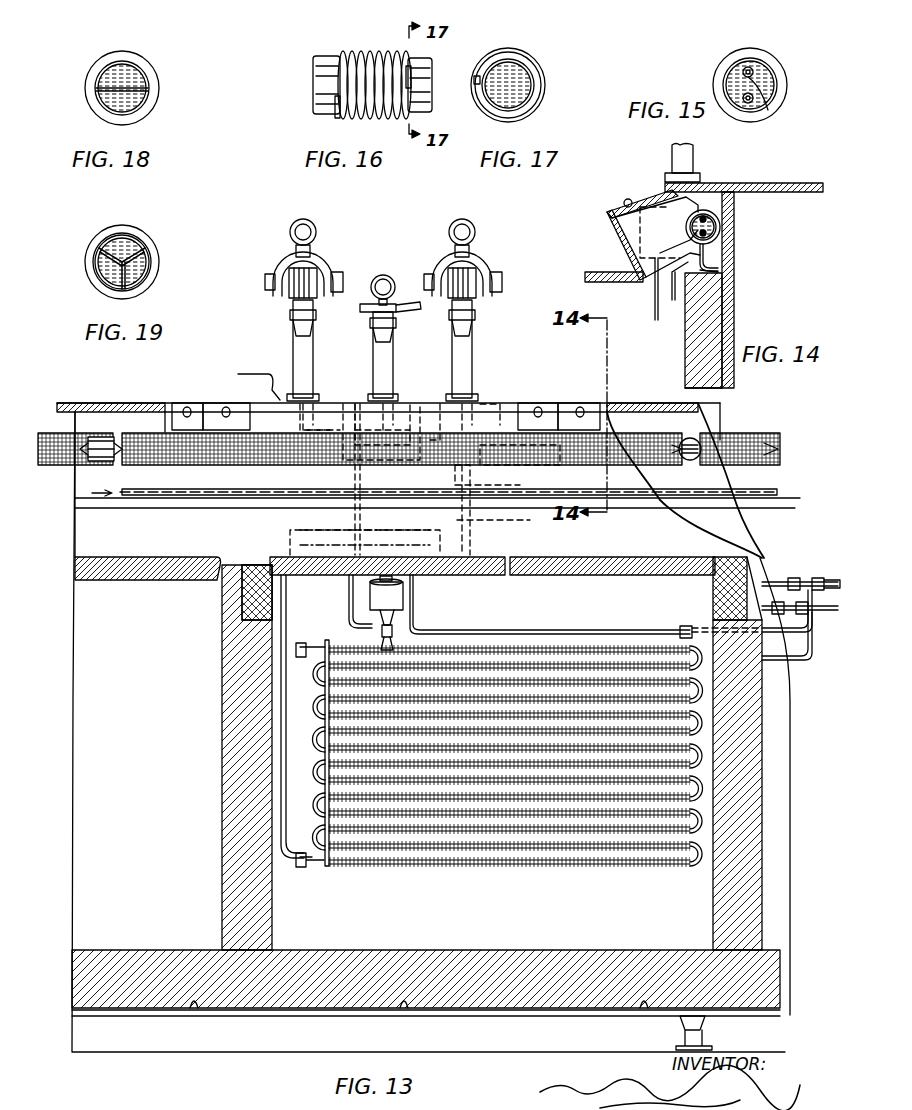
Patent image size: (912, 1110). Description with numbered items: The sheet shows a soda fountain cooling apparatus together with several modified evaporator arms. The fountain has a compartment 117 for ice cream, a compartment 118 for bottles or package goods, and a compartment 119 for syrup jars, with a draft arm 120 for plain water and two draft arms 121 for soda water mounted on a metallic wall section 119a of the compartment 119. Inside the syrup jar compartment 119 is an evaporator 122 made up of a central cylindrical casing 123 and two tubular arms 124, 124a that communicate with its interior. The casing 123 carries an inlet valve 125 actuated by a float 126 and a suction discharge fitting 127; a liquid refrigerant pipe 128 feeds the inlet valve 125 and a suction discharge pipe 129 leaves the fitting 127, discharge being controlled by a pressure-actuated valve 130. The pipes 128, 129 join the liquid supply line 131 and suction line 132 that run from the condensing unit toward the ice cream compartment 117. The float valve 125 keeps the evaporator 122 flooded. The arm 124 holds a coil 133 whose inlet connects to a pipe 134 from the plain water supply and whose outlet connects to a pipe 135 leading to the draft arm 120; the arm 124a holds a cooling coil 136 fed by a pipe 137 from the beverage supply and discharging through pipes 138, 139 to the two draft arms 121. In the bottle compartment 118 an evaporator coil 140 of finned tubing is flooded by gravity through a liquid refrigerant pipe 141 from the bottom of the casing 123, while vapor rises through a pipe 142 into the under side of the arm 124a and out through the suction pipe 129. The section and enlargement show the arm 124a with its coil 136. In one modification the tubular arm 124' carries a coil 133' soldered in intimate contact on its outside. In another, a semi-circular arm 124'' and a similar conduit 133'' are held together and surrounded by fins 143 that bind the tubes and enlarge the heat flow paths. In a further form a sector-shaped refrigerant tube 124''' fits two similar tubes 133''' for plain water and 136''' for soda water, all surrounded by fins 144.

In FIG. 13, the compartment for ice cream 117 is at (431, 732).
In FIG. 13, the compartment for bottles 118 is at (492, 753).
In FIG. 14, the compartment for syrup jars 119 is at (655, 292).
In FIG. 13, the compartment for syrup jars 119 is at (58, 424).
In FIG. 13, the metallic wall section 119a is at (256, 375).
In FIG. 13, the draft arm for plain water 120 is at (390, 350).
In FIG. 14, the draft arm for soda water 121 is at (698, 152).
In FIG. 13, the draft arm for soda water 121 is at (297, 336).
In FIG. 14, the evaporator 122 is at (640, 270).
In FIG. 13, the evaporator 122 is at (430, 500).
In FIG. 14, the central cylindrical casing 123 is at (718, 252).
In FIG. 13, the central cylindrical casing 123 is at (412, 480).
In FIG. 13, the tubular arm 124 is at (348, 466).
In FIG. 15, the tubular arm 124a is at (752, 60).
In FIG. 14, the tubular arm 124a is at (716, 232).
In FIG. 13, the tubular arm 124a is at (768, 436).
In FIG. 16, the tubular arm 124' is at (347, 85).
In FIG. 17, the tubular arm 124' is at (537, 74).
In FIG. 18, the tubular arm 124'' is at (150, 78).
In FIG. 19, the liquid refrigerant tube 124''' is at (137, 245).
In FIG. 14, the inlet valve 125 is at (646, 195).
In FIG. 13, the inlet valve 125 is at (396, 400).
In FIG. 13, the float 126 is at (422, 530).
In FIG. 13, the suction discharge fitting 127 is at (336, 400).
In FIG. 14, the liquid refrigerant pipe 128 is at (654, 312).
In FIG. 13, the liquid refrigerant pipe 128 is at (455, 472).
In FIG. 13, the suction discharge pipe 129 is at (350, 600).
In FIG. 13, the valve 130 is at (384, 620).
In FIG. 13, the liquid supply line 131 is at (786, 580).
In FIG. 13, the suction line 132 is at (820, 612).
In FIG. 13, the coil 133 is at (199, 469).
In FIG. 16, the coil 133' is at (346, 100).
In FIG. 17, the coil 133' is at (540, 86).
In FIG. 18, the conduit 133'' is at (146, 104).
In FIG. 19, the tube for plain water 133''' is at (147, 268).
In FIG. 13, the pipe 134 is at (124, 497).
In FIG. 13, the pipe 135 is at (348, 404).
In FIG. 15, the cooling coil 136 is at (777, 97).
In FIG. 14, the cooling coil 136 is at (745, 223).
In FIG. 13, the cooling coil 136 is at (658, 463).
In FIG. 19, the tube for soda water 136''' is at (93, 276).
In FIG. 13, the pipe 137 is at (520, 497).
In FIG. 14, the pipe 138 is at (710, 190).
In FIG. 13, the pipe 138 is at (478, 400).
In FIG. 13, the pipe 139 is at (440, 404).
In FIG. 13, the evaporator coil 140 is at (422, 866).
In FIG. 13, the liquid refrigerant pipe 141 is at (455, 528).
In FIG. 13, the pipe 142 is at (400, 550).
In FIG. 18, the fins 143 is at (104, 62).
In FIG. 19, the fins 144 is at (102, 240).